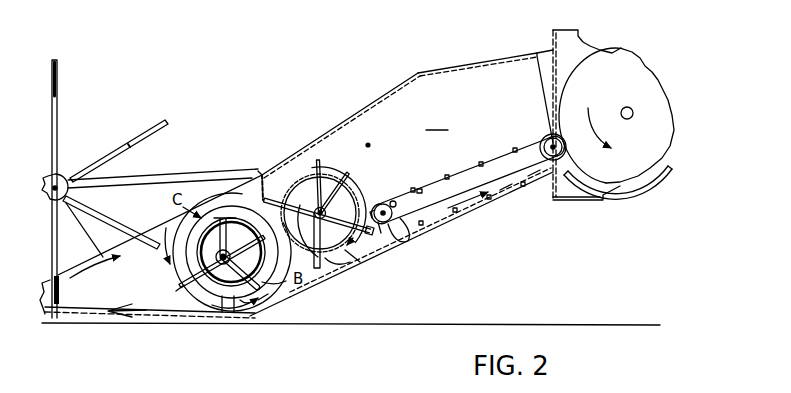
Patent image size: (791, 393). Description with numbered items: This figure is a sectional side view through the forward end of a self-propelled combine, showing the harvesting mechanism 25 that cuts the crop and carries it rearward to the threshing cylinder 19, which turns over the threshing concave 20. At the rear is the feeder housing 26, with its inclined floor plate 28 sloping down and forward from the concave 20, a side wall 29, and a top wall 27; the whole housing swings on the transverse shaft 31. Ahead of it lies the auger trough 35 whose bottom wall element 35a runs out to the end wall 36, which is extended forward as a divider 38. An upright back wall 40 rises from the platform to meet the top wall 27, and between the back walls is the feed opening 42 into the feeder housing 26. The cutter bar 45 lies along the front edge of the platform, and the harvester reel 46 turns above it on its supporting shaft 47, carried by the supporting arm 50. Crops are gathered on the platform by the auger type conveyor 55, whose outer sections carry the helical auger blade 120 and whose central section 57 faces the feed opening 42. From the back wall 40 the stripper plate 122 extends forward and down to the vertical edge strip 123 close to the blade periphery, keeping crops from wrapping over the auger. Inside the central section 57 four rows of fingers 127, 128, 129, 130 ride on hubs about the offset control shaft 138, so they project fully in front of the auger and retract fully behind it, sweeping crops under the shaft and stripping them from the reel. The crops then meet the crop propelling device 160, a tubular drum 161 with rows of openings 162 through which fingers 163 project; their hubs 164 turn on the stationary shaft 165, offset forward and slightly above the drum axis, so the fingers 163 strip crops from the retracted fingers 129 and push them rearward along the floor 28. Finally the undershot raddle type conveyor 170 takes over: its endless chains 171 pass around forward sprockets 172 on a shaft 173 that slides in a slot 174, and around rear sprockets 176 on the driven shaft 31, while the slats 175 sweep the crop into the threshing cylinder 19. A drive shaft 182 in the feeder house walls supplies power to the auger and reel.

The threshing cylinder 19 is at (610, 50).
The threshing concave 20 is at (645, 189).
The harvesting mechanism 25 is at (282, 128).
The feeder housing 26 is at (430, 70).
The top wall 27 is at (460, 66).
The bottom wall or floor plate 28 is at (463, 216).
The side wall 29 is at (437, 122).
The transverse shaft 31 is at (550, 139).
The auger trough or grain pan 35 is at (196, 314).
The bottom wall element 35a is at (266, 318).
The end wall 36 is at (158, 235).
The divider 38 is at (45, 314).
The back wall 40 is at (265, 192).
The feed opening 42 is at (292, 289).
The cutter bar 45 is at (116, 315).
The harvester reel 46 is at (165, 116).
The supporting shaft 47 is at (58, 185).
The supporting arm 50 is at (140, 181).
The auger type conveyor 55 is at (203, 197).
The central section 57 is at (222, 303).
The helical auger blade 120 is at (233, 302).
The stripper plate 122 is at (257, 170).
The vertical edge strip 123 is at (236, 217).
The finger 127 is at (186, 286).
The finger 128 is at (247, 304).
The finger 129 is at (266, 298).
The finger 130 is at (222, 216).
The supporting or control shaft 138 is at (190, 278).
The crop propelling device 160 is at (365, 182).
The tubular drum 161 is at (356, 248).
The openings 162 is at (333, 264).
The finger 163 is at (321, 235).
The hub 164 is at (333, 163).
The stationary shaft 165 is at (325, 212).
The undershot raddle type conveyor 170 is at (470, 164).
The endless chain 171 is at (420, 186).
The sprocket 172 is at (412, 241).
The shaft 173 is at (383, 222).
The slot 174 is at (388, 199).
The crop engageable slat 175 is at (533, 169).
The sprocket 176 is at (546, 140).
The shaft 182 is at (369, 143).